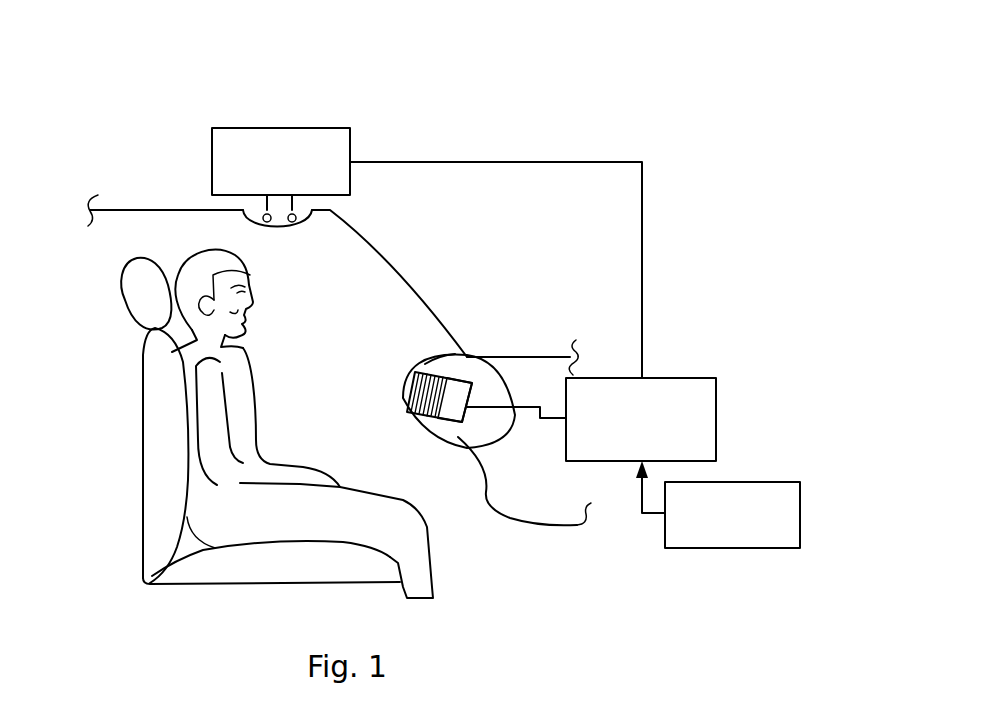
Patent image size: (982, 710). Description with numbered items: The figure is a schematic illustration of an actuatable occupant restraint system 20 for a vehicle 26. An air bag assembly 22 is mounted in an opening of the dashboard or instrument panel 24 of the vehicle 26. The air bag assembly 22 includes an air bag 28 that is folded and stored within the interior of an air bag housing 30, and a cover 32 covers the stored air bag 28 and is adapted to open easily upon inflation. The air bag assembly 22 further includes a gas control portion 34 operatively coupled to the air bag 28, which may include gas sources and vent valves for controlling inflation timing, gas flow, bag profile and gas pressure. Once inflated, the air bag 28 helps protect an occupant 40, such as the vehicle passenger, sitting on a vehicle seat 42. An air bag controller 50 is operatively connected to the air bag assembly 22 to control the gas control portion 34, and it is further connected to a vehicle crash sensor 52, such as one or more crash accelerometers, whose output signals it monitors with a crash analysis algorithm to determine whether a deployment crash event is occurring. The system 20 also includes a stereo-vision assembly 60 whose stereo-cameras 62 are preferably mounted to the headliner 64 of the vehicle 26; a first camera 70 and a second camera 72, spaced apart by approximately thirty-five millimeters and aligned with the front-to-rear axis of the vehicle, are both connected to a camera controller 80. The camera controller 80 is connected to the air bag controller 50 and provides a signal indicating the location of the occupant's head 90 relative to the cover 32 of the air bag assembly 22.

The actuatable occupant restraint system 20 is at (560, 123).
The air bag assembly 22 is at (460, 364).
The instrument panel 24 is at (440, 353).
The vehicle 26 is at (155, 201).
The air bag 28 is at (410, 413).
The air bag housing 30 is at (445, 422).
The cover 32 is at (410, 390).
The gas control portion 34 is at (471, 431).
The occupant 40 is at (243, 345).
The vehicle seat 42 is at (136, 395).
The air bag controller 50 is at (691, 368).
The vehicle crash sensor 52 is at (745, 468).
The stereo-vision assembly 60 is at (142, 106).
The stereo-cameras 62 is at (240, 227).
The headliner 64 is at (183, 212).
The first camera 70 is at (267, 236).
The second camera 72 is at (304, 228).
The camera controller 80 is at (343, 128).
The occupant's head 90 is at (162, 256).